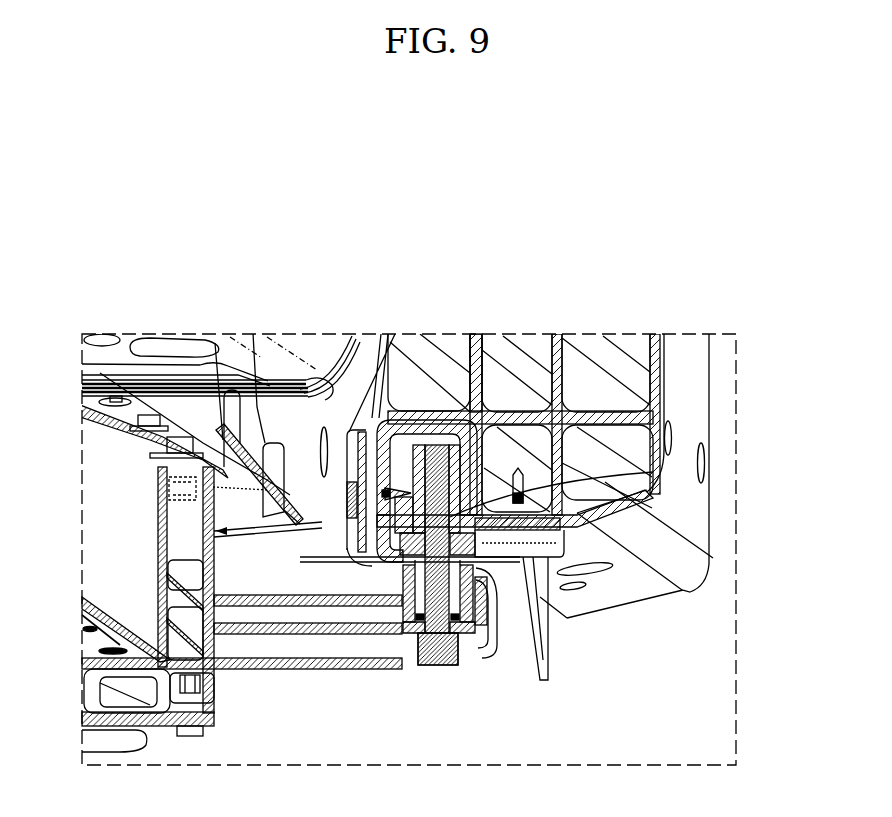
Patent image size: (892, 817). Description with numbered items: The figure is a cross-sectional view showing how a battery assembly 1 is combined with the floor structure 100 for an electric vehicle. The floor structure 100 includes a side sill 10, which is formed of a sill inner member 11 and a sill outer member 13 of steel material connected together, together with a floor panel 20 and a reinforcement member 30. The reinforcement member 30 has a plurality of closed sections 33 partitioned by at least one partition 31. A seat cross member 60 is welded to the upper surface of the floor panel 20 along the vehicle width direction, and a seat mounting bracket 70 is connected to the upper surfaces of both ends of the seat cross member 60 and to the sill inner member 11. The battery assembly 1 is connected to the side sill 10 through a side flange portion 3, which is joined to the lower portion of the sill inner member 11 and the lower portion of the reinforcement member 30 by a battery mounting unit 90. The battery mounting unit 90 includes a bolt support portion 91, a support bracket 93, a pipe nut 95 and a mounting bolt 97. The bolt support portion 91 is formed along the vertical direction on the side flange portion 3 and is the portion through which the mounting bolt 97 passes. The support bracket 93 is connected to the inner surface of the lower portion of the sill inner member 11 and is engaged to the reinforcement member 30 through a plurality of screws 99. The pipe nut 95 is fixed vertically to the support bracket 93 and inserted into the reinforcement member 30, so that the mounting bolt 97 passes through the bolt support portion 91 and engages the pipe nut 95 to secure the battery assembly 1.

The floor structure 100 is at (413, 216).
The battery assembly 1 is at (242, 611).
The side flange portion 3 is at (327, 670).
The side sill 10 is at (570, 455).
The sill inner member 11 is at (350, 500).
The sill outer member 13 is at (690, 572).
The floor panel 20 is at (204, 399).
The reinforcement member 30 is at (555, 596).
The partition 31 is at (463, 470).
The closed section 33 is at (465, 422).
The seat cross member 60 is at (199, 357).
The seat mounting bracket 70 is at (330, 338).
The battery mounting unit 90 is at (438, 693).
The bolt support portion 91 is at (403, 613).
The support bracket 93 is at (400, 555).
The pipe nut 95 is at (400, 440).
The mounting bolt 97 is at (445, 657).
The screw 99 is at (390, 430).